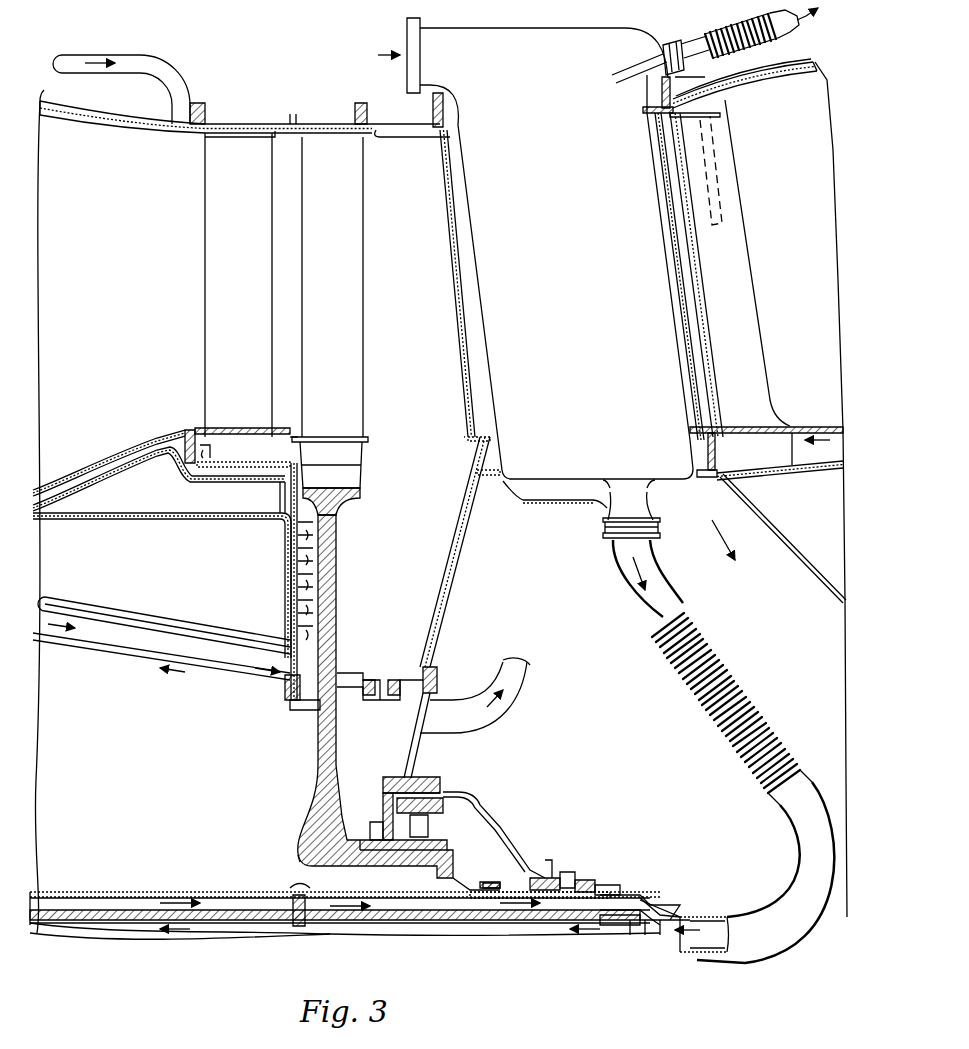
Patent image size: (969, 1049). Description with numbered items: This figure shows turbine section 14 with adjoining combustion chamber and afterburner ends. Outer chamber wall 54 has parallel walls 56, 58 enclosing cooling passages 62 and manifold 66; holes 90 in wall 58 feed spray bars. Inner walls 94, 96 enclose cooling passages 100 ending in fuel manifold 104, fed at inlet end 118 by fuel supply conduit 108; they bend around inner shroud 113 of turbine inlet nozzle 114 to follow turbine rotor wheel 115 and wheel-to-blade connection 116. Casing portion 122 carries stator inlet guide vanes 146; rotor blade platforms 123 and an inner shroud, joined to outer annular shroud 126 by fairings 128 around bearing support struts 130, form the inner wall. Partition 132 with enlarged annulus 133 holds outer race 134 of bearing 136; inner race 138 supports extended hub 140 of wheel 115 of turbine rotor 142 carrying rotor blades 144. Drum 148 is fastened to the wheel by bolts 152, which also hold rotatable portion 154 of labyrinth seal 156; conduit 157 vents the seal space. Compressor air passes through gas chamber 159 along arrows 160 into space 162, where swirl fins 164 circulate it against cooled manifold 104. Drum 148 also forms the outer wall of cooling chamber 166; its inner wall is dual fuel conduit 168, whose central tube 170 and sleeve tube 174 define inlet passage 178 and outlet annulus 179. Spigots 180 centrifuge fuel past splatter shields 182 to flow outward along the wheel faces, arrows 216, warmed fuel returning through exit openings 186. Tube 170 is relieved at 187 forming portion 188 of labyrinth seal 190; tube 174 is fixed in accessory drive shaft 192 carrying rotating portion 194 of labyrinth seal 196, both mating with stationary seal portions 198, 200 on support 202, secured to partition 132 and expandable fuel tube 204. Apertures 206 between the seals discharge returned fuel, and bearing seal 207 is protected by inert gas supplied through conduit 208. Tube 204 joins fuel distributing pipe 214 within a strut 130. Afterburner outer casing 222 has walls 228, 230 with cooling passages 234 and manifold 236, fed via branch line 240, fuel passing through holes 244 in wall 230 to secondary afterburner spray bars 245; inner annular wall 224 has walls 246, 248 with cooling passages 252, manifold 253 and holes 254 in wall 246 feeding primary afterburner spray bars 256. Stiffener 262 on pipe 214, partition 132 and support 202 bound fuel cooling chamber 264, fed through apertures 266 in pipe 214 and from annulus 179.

The turbine section 14 is at (296, 115).
The outer chamber wall 54 is at (45, 98).
The wall 56 is at (115, 125).
The wall 58 is at (102, 130).
The cooling passages 62 is at (46, 112).
The annular manifold 66 is at (172, 133).
The holes 90 is at (165, 95).
The wall 94 is at (135, 452).
The wall 96 is at (145, 448).
The cooling passages 100 is at (83, 495).
The annular fuel manifold 104 is at (185, 430).
The fuel supply conduit 108 is at (103, 615).
The inner shroud 113 is at (250, 428).
The turbine inlet nozzle 114 is at (203, 228).
The turbine rotor wheel 115 is at (342, 600).
The wheel-to-blade connection 116 is at (360, 478).
The inlet end 118 is at (290, 635).
The annular casing portion 122 is at (246, 124).
The rotor blade platforms 123 is at (305, 437).
The outer annular shroud 126 is at (390, 138).
The streamlined fairings 128 is at (448, 210).
The turbine bearing support struts 130 is at (478, 298).
The annular partition 132 is at (462, 562).
The enlarged annulus 133 is at (400, 785).
The outer race 134 is at (425, 776).
The annular bearing 136 is at (470, 808).
The inner race 138 is at (453, 848).
The extended hub 140 is at (358, 864).
The turbine rotor 142 is at (316, 740).
The rotor blades 144 is at (352, 323).
The stator inlet guide vanes 146 is at (220, 300).
The annular drum 148 is at (150, 665).
The bolts 152 is at (288, 692).
The rotatable portion 154 is at (370, 698).
The labyrinth seal 156 is at (385, 676).
The conduit 157 is at (525, 695).
The annular gas chamber 159 is at (242, 479).
The arrows 160 is at (48, 633).
The space 162 is at (316, 535).
The swirl producing fins 164 is at (318, 580).
The cooling chamber 166 is at (45, 920).
The dual fuel conduit 168 is at (162, 930).
The central tube 170 is at (520, 922).
The sleeve tube 174 is at (136, 890).
The fuel inlet passage 178 is at (80, 930).
The fuel outlet line 179 is at (247, 912).
The spigots 180 is at (298, 927).
The splatter shield 182 is at (292, 885).
The fuel exit openings 186 is at (462, 905).
The relieved portion 187 is at (612, 925).
The seal portion 188 is at (640, 928).
The labyrinth seal 190 is at (652, 907).
The accessory drive shaft 192 is at (528, 880).
The rotating portion 194 is at (592, 885).
The labyrinth seal 196 is at (632, 895).
The stationary seal portion 198 is at (610, 885).
The stationary seal portion 200 is at (650, 930).
The stationary annular support 202 is at (535, 870).
The expandable fuel tube 204 is at (735, 945).
The apertures 206 is at (648, 905).
The bearing seal 207 is at (570, 880).
The conduit 208 is at (600, 880).
The fuel distributing pipe 214 is at (597, 75).
The arrows 216 is at (298, 835).
The outer annular engine casing 222 is at (770, 96).
The inner annular wall 224 is at (800, 427).
The wall 228 is at (760, 50).
The wall 230 is at (818, 66).
The cooling passages 234 is at (785, 74).
The annular manifold 236 is at (712, 92).
The expandable branch line 240 is at (808, 22).
The holes 244 is at (700, 108).
The secondary afterburner spray bars 245 is at (712, 186).
The wall 246 is at (832, 427).
The wall 248 is at (770, 462).
The cooling passages 252 is at (822, 470).
The manifold 253 is at (706, 480).
The holes 254 is at (753, 427).
The primary afterburner spray bars 256 is at (752, 346).
The annular stiffener 262 is at (490, 470).
The fuel cooling chamber 264 is at (466, 615).
The apertures 266 is at (553, 505).